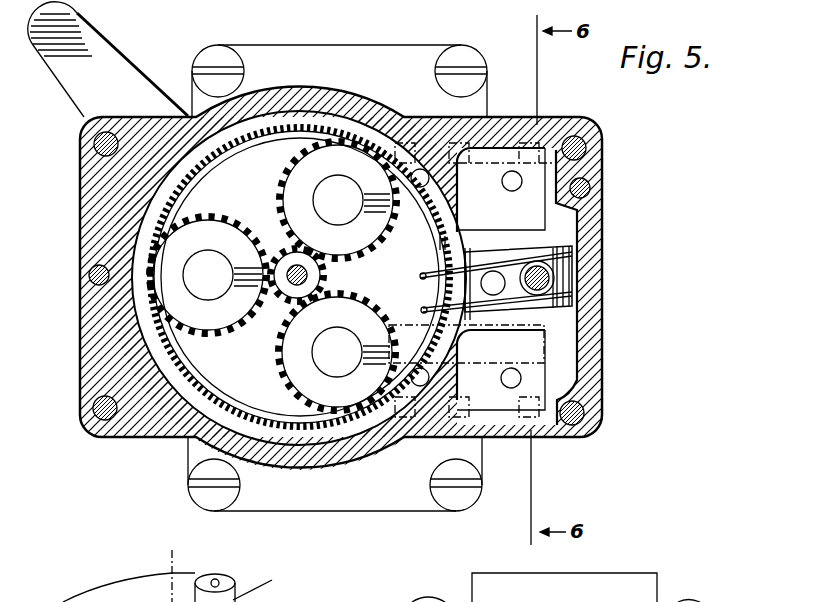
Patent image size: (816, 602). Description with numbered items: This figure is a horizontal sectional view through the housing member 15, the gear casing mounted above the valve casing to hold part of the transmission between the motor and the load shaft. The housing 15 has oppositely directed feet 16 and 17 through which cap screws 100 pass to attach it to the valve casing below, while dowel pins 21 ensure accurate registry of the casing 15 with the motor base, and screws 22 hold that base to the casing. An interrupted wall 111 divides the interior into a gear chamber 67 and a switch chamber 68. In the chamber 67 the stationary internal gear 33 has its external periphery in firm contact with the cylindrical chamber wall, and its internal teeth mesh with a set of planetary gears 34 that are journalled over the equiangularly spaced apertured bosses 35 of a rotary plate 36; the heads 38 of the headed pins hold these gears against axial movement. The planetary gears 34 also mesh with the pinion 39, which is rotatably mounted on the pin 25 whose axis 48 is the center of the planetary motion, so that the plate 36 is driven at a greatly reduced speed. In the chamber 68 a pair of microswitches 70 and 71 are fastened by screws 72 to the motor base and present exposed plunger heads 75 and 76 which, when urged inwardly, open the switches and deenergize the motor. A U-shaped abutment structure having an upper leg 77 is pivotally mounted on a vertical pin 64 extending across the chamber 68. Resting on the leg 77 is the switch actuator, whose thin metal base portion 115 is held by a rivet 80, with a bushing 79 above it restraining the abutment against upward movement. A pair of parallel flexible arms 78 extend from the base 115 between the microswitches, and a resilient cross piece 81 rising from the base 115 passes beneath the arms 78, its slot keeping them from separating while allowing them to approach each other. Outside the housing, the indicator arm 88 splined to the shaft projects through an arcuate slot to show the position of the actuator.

In FIG. 5, the housing member 15 is at (334, 84).
In FIG. 5, the foot 16 is at (363, 500).
In FIG. 5, the foot 17 is at (317, 45).
In FIG. 5, the dowel pin 21 is at (89, 275).
In FIG. 5, the screw 22 is at (94, 144).
In FIG. 5, the pin 25 is at (285, 274).
In FIG. 5, the stationary internal gear 33 is at (300, 433).
In FIG. 5, the planetary gear 34 is at (228, 228).
In FIG. 6, the apertured boss 35 is at (262, 600).
In FIG. 5, the rotary plate 36 is at (213, 355).
In FIG. 6, the rotary plate 36 is at (283, 600).
In FIG. 5, the head 38 is at (325, 193).
In FIG. 5, the pinion 39 is at (322, 277).
In FIG. 6, the axis 48 is at (171, 571).
In FIG. 5, the pin 64 is at (550, 277).
In FIG. 5, the chamber 67 is at (348, 121).
In FIG. 5, the chamber 68 is at (567, 369).
In FIG. 5, the microswitch 70 is at (546, 219).
In FIG. 5, the microswitch 71 is at (548, 347).
In FIG. 5, the screw 72 is at (502, 181).
In FIG. 5, the plunger head 75 is at (432, 250).
In FIG. 5, the plunger head 76 is at (424, 298).
In FIG. 5, the upper leg 77 is at (568, 250).
In FIG. 5, the flexible arm 78 is at (488, 265).
In FIG. 5, the bushing 79 is at (560, 287).
In FIG. 5, the rivet 80 is at (494, 290).
In FIG. 5, the resilient cross piece 81 is at (465, 251).
In FIG. 5, the indicator arm 88 is at (122, 65).
In FIG. 5, the cap screw 100 is at (221, 52).
In FIG. 5, the interrupted wall 111 is at (457, 214).
In FIG. 5, the base portion 115 is at (560, 305).